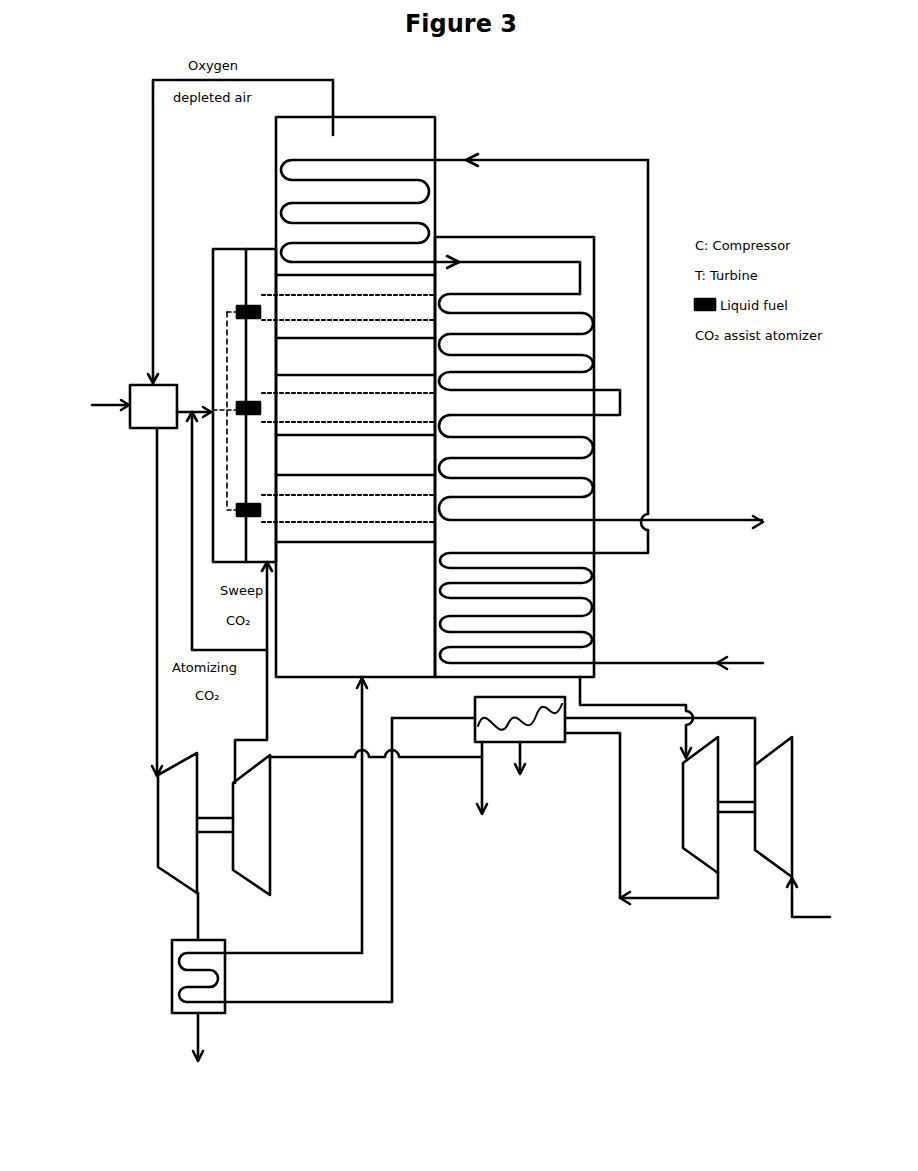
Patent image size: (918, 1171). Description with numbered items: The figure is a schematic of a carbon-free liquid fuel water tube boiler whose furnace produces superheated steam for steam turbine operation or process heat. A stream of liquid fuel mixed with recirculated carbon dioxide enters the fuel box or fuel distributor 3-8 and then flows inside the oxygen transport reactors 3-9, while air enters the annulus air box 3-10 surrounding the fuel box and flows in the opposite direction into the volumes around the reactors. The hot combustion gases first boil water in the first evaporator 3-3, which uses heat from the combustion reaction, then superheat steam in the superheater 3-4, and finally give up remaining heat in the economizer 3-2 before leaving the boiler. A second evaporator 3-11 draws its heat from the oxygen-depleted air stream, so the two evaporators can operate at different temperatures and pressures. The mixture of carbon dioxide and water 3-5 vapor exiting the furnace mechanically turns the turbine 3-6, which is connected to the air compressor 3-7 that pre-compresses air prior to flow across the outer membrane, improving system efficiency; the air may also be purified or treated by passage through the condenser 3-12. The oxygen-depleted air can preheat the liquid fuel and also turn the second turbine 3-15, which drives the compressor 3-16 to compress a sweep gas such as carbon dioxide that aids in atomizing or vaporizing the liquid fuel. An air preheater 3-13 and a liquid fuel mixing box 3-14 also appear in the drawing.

The economizer 3-2 is at (625, 414).
The evaporator 3-3 is at (390, 140).
The superheater 3-4 is at (562, 465).
The mixture of carbon dioxide and water 3-5 is at (660, 702).
The turbine 3-6 is at (710, 822).
The air compressor 3-7 is at (778, 785).
The fuel box 3-8 is at (267, 235).
The oxygen transport reactors 3-9 is at (325, 548).
The annulus air box 3-10 is at (350, 686).
The second evaporator 3-11 is at (572, 270).
The condenser 3-12 is at (557, 746).
The air preheater 3-13 is at (172, 1018).
The liquid fuel mixing box 3-14 is at (142, 381).
The second turbine 3-15 is at (153, 815).
The compressor 3-16 is at (280, 822).